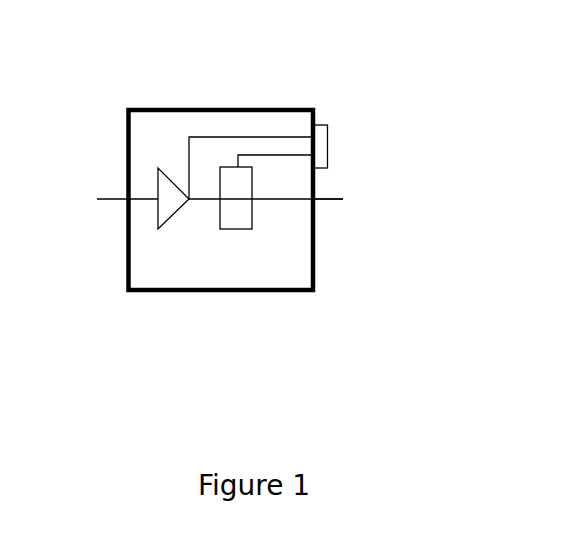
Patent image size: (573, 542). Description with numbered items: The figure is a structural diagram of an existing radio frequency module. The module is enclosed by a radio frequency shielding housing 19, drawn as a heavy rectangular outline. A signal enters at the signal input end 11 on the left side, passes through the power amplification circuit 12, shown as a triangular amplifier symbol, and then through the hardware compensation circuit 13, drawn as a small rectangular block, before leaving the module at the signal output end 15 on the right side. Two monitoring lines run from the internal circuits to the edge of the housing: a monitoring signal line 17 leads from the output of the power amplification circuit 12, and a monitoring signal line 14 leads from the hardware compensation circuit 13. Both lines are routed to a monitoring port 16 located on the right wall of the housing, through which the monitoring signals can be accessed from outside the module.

The signal input end 11 is at (108, 226).
The power amplification circuit 12 is at (181, 237).
The hardware compensation circuit 13 is at (243, 254).
The monitoring signal line 14 is at (274, 175).
The signal output end 15 is at (340, 212).
The monitoring port 16 is at (351, 130).
The monitoring signal line 17 is at (161, 156).
The radio frequency shielding housing 19 is at (242, 102).